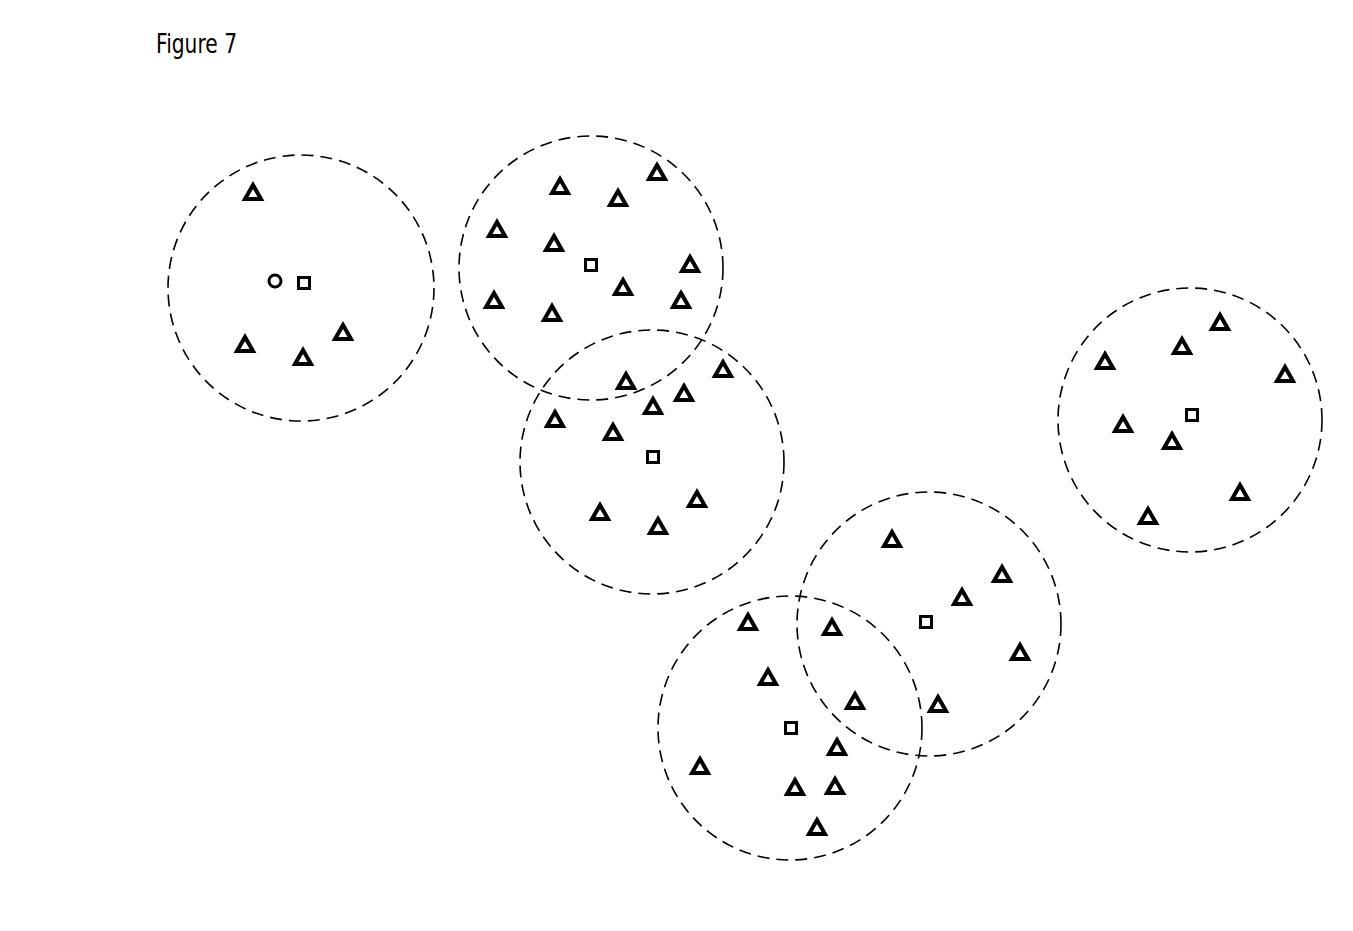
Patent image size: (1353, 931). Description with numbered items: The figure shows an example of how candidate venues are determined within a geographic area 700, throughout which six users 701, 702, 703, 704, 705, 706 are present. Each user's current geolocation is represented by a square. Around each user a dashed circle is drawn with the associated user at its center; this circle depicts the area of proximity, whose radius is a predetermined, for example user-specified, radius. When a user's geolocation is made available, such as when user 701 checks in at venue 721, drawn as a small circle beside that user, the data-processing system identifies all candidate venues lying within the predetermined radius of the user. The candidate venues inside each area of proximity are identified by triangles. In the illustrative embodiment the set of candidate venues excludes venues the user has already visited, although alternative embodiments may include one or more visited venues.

The geographic area 700 is at (246, 128).
The user 701 is at (338, 266).
The user 702 is at (626, 249).
The user 703 is at (685, 440).
The user 704 is at (757, 713).
The user 705 is at (963, 640).
The user 706 is at (1224, 398).
The venue 721 is at (241, 265).